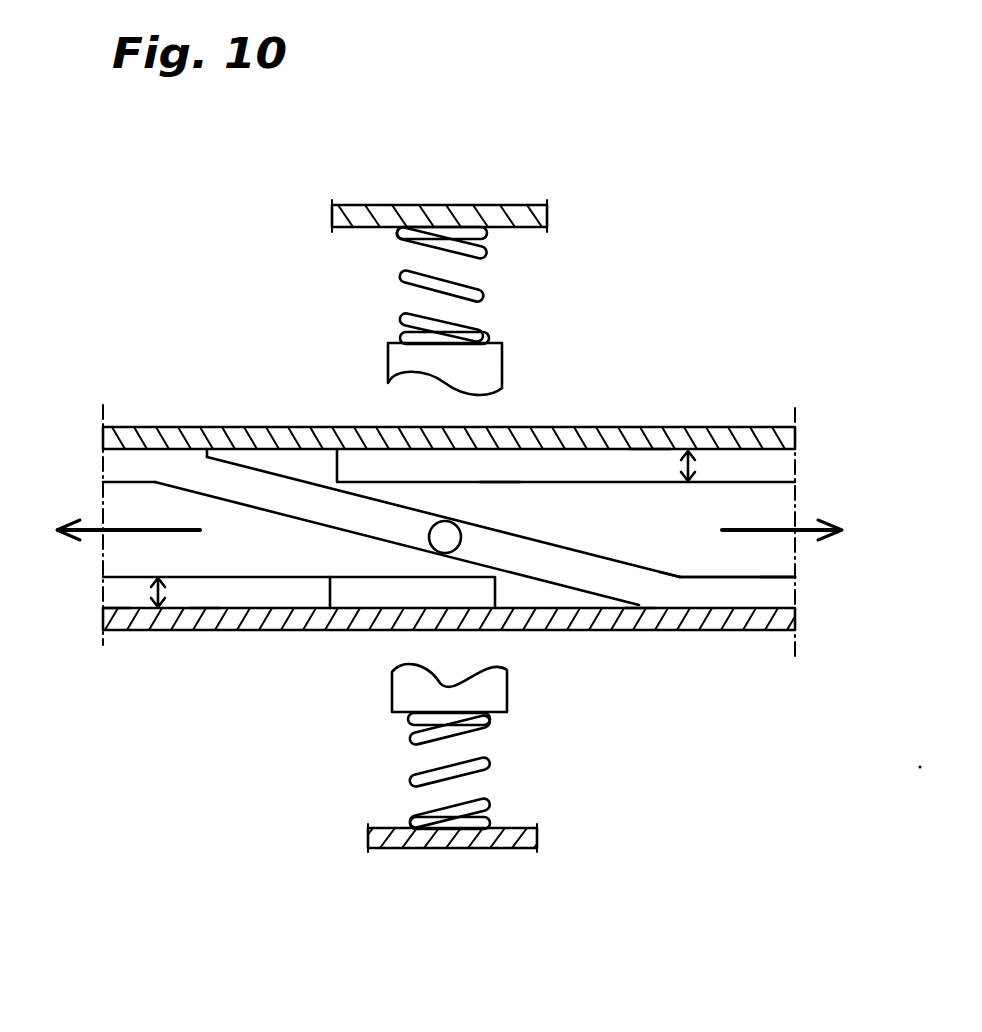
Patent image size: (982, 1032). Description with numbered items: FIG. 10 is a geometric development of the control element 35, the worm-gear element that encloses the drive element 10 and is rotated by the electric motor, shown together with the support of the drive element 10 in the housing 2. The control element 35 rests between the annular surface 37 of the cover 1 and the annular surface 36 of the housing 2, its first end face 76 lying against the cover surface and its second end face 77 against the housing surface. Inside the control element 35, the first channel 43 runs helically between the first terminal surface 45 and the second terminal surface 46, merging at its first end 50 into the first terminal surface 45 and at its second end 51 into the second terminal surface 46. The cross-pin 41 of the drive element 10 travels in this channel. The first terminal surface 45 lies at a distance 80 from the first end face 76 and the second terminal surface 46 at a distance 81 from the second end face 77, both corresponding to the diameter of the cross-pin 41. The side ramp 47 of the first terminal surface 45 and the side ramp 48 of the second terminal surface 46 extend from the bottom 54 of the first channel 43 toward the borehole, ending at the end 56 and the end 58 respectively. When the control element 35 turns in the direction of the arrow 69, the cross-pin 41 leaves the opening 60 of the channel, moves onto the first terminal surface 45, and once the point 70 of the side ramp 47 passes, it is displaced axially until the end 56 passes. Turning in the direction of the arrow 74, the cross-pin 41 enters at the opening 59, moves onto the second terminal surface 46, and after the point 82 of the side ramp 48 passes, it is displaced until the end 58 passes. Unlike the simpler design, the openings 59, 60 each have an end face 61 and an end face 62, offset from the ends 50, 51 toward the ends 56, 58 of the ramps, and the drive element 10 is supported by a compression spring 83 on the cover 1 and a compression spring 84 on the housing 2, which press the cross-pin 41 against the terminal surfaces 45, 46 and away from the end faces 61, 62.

The cover 1 is at (400, 215).
The housing 2 is at (458, 840).
The drive element 10 is at (485, 367).
The control element 35 is at (760, 565).
The annular surface of the housing 36 is at (272, 612).
The annular surface of the cover 37 is at (605, 448).
The cross-pin 41 is at (445, 521).
The first channel 43 is at (366, 522).
The first terminal surface 45 is at (103, 478).
The second terminal surface 46 is at (765, 580).
The side ramp 47 is at (777, 465).
The side ramp 48 is at (120, 598).
The first end of the first channel 50 is at (157, 484).
The second end of the first channel 51 is at (680, 577).
The bottom of the first channel 54 is at (543, 557).
The end of the side ramp 56 is at (337, 465).
The end of the side ramp 58 is at (492, 595).
The opening of the first channel 59 is at (198, 473).
The opening of the first channel 60 is at (653, 588).
The end face 61 is at (212, 452).
The end face 62 is at (642, 608).
The arrow 69 is at (768, 528).
The point of the side ramp 70 is at (510, 482).
The arrow 74 is at (120, 528).
The first end face of the control element 76 is at (650, 447).
The second end face of the control element 77 is at (197, 608).
The distance 80 is at (697, 460).
The distance 81 is at (156, 610).
The point of the side ramp 82 is at (331, 580).
The compression spring 83 is at (457, 290).
The compression spring 84 is at (463, 773).